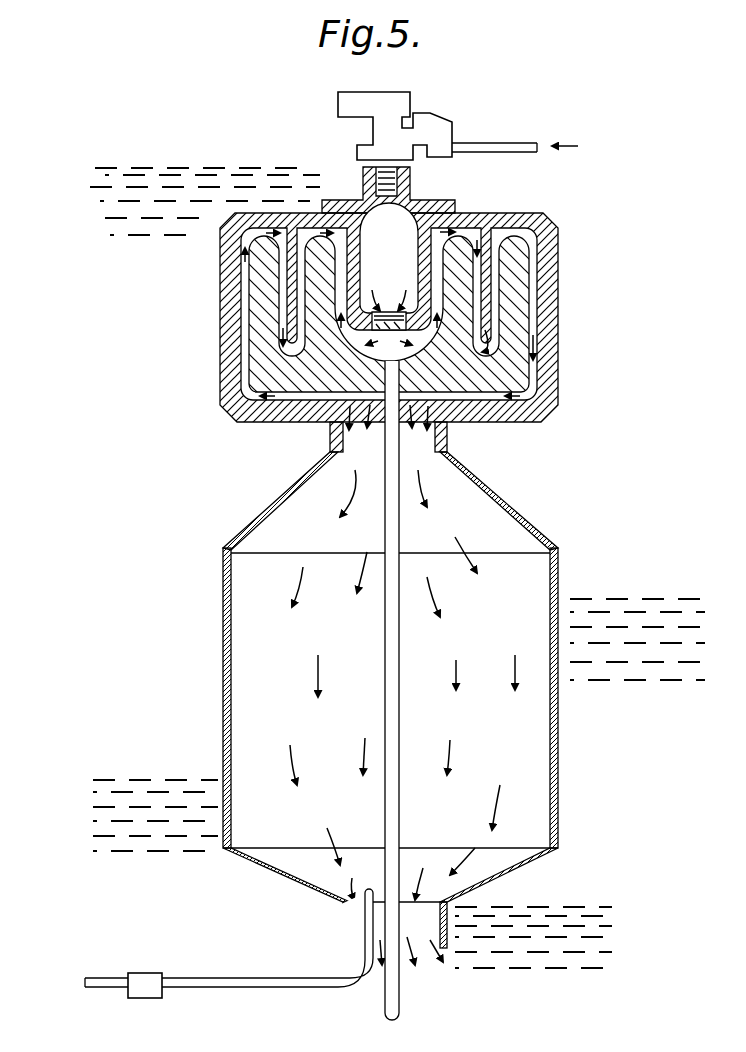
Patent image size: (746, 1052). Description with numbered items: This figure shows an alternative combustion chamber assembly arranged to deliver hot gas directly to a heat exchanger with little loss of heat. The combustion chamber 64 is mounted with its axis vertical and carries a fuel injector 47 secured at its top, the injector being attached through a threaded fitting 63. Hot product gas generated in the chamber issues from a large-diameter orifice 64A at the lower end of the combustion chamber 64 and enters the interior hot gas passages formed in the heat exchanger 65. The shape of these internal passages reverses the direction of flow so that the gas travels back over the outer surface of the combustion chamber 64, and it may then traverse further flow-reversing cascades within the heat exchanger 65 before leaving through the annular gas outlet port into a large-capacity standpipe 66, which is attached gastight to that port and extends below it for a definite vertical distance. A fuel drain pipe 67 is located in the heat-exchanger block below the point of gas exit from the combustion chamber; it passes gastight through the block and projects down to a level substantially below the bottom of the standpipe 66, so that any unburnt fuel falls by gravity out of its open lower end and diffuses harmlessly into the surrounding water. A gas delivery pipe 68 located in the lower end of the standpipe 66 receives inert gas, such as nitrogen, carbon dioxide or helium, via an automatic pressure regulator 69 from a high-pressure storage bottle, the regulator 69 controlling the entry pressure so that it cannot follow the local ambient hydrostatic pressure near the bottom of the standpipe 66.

The fuel injector 47 is at (410, 104).
The threaded fitting 63 is at (357, 197).
The combustion chamber 64 is at (415, 327).
The large-diameter orifice 64A is at (410, 257).
The heat exchanger 65 is at (327, 318).
The standpipe 66 is at (225, 683).
The fuel drain pipe 67 is at (397, 690).
The gas delivery pipe 68 is at (287, 983).
The automatic pressure regulator 69 is at (152, 975).